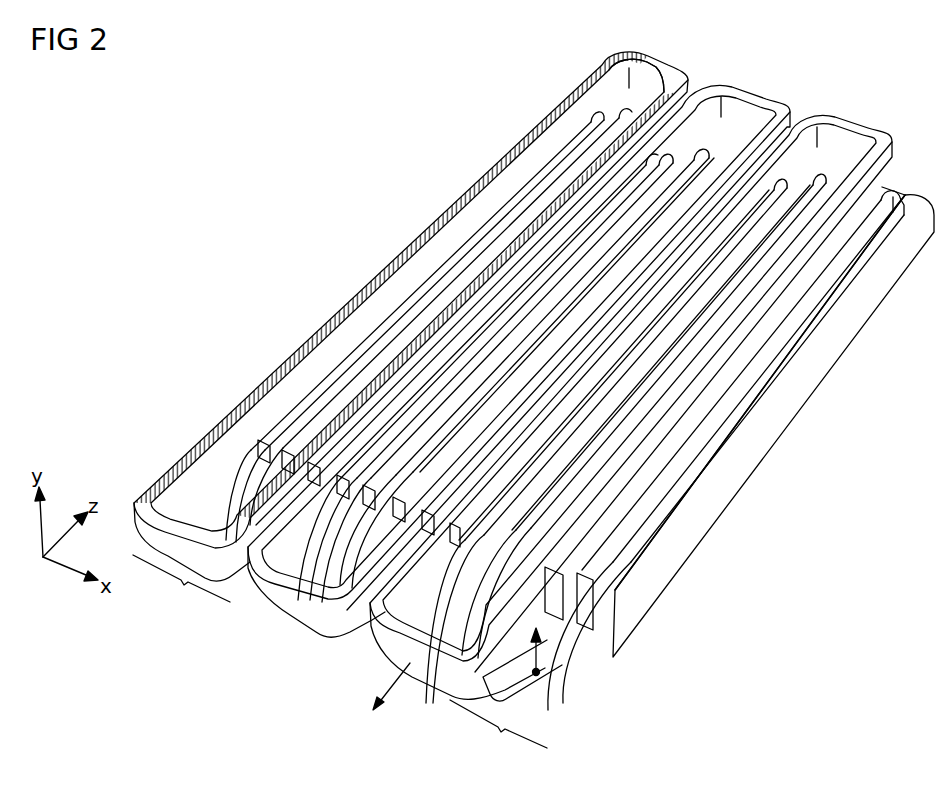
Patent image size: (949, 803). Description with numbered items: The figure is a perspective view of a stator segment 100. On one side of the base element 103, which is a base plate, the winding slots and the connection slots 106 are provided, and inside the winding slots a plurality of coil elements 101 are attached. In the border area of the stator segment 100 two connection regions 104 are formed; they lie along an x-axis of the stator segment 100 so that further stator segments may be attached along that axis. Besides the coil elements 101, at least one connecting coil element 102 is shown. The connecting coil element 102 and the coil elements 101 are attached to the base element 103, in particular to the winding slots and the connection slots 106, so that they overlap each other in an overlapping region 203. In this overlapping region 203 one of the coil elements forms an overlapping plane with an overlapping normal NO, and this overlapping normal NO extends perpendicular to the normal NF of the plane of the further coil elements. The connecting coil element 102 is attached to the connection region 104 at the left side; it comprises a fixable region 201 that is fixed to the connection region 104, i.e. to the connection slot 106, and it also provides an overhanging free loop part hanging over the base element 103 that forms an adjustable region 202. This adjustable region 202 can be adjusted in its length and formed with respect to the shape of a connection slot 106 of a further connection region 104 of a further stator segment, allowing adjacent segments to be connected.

The stator segment 100 is at (773, 422).
The coil elements 101 is at (808, 120).
The connecting coil element 102 is at (414, 303).
The base element 103 is at (773, 423).
The connection regions 104 is at (340, 659).
The connection slots 106 is at (870, 210).
The fixable region 201 is at (673, 83).
The adjustable region 202 is at (468, 194).
The overlapping region 203 is at (530, 686).
The normal of a plane of the further coil elements NF is at (385, 690).
The overlapping normal NO is at (557, 672).